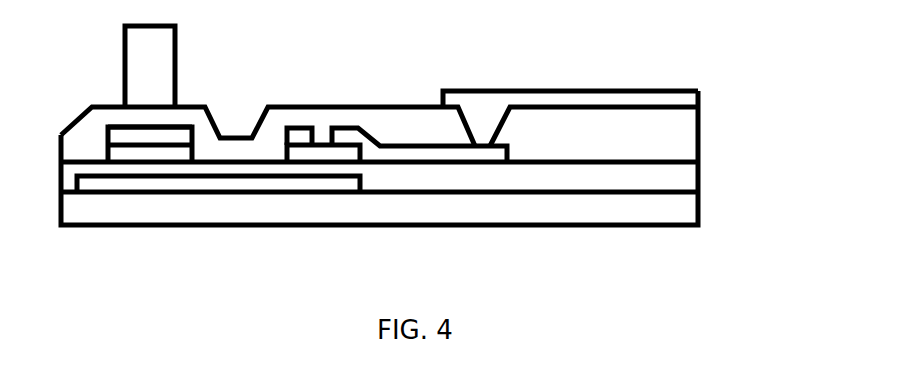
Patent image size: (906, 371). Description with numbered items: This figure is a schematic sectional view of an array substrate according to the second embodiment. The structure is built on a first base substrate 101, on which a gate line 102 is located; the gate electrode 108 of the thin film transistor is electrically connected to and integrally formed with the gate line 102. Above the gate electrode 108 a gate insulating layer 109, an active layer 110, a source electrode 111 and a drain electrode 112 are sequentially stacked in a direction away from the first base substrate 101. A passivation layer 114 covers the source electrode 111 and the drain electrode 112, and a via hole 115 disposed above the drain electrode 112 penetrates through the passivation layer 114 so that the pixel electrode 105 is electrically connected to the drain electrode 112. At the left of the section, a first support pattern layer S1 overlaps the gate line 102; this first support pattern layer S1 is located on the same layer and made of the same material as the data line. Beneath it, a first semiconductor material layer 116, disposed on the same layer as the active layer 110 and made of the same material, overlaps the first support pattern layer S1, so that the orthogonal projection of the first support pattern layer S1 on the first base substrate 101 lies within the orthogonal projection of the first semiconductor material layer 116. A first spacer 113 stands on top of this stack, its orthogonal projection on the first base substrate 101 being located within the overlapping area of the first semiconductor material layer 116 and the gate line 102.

The first base substrate 101 is at (690, 215).
The gate line 102 is at (173, 183).
The pixel electrode 105 is at (690, 99).
The gate electrode 108 is at (323, 182).
The gate insulating layer 109 is at (688, 177).
The active layer 110 is at (320, 155).
The source electrode 111 is at (300, 138).
The drain electrode 112 is at (348, 138).
The first spacer 113 is at (123, 80).
The passivation layer 114 is at (688, 130).
The via hole 115 is at (483, 123).
The first semiconductor material layer 116 is at (132, 153).
The first support pattern layer S1 is at (140, 137).